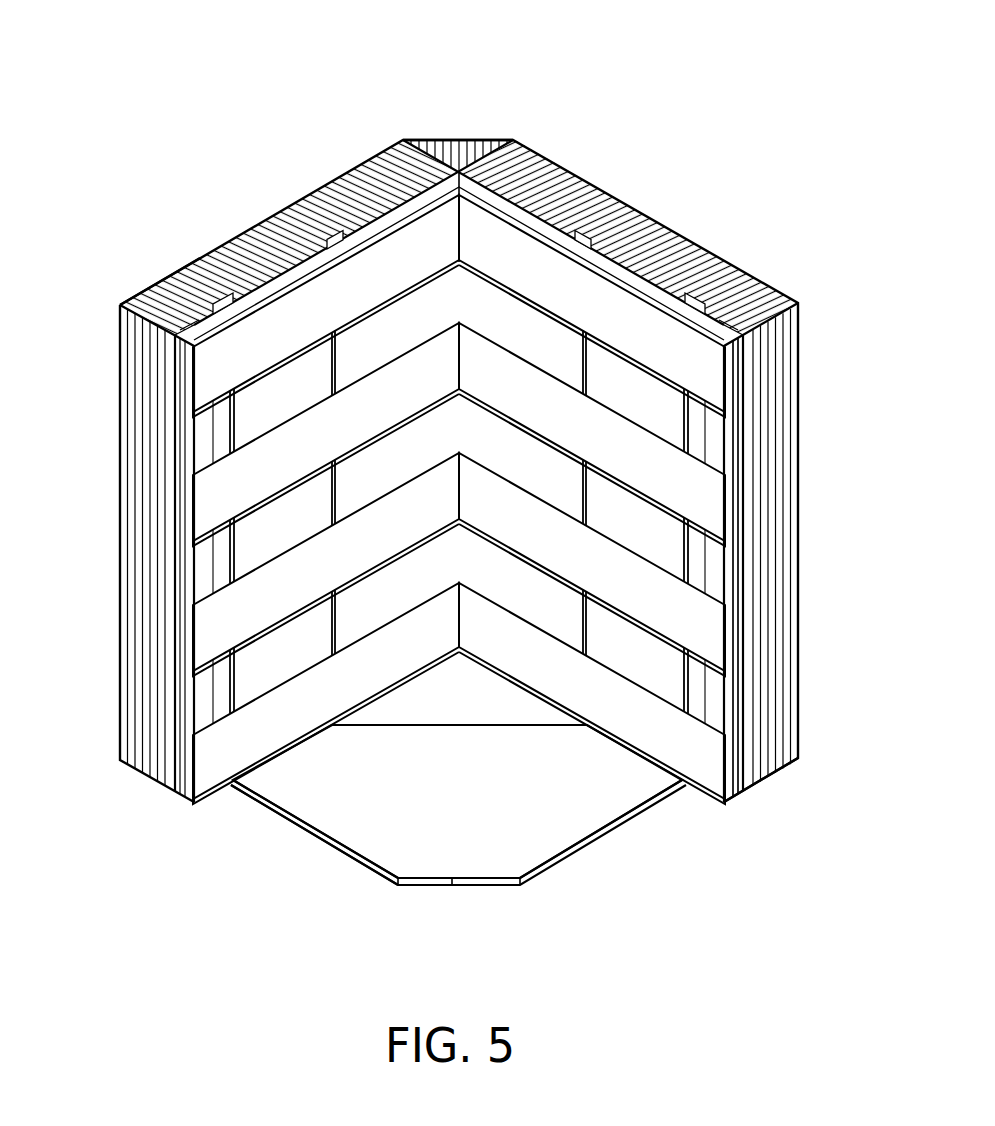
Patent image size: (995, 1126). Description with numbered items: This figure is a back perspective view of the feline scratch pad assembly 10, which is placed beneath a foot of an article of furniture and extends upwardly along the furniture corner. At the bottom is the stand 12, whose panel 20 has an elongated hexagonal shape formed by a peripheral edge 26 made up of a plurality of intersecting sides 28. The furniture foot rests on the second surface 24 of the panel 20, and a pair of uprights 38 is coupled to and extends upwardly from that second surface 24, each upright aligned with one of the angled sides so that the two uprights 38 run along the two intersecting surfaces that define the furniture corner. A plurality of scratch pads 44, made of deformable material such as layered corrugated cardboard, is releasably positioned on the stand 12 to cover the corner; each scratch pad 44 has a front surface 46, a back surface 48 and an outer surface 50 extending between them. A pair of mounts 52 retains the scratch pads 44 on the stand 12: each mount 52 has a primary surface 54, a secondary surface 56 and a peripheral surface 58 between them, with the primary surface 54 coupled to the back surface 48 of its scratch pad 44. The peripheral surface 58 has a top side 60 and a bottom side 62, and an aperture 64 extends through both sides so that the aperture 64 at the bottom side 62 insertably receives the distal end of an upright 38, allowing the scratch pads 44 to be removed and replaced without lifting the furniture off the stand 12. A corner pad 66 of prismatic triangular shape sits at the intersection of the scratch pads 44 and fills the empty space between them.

The feline scratch pad assembly 10 is at (760, 96).
The stand 12 is at (597, 840).
The panel 20 is at (372, 826).
The second surface 24 is at (538, 820).
The peripheral edge 26 is at (274, 815).
The intersecting sides 28 is at (315, 838).
The uprights 38 is at (332, 374).
The scratch pads 44 is at (235, 318).
The front surface 46 is at (118, 358).
The back surface 48 is at (172, 300).
The outer surface 50 is at (158, 310).
The mounts 52 is at (373, 221).
The primary surface 54 is at (740, 323).
The secondary surface 56 is at (715, 754).
The peripheral surface 58 is at (738, 515).
The top side 60 is at (721, 325).
The bottom side 62 is at (738, 797).
The aperture 64 is at (298, 266).
The corner pad 66 is at (437, 140).